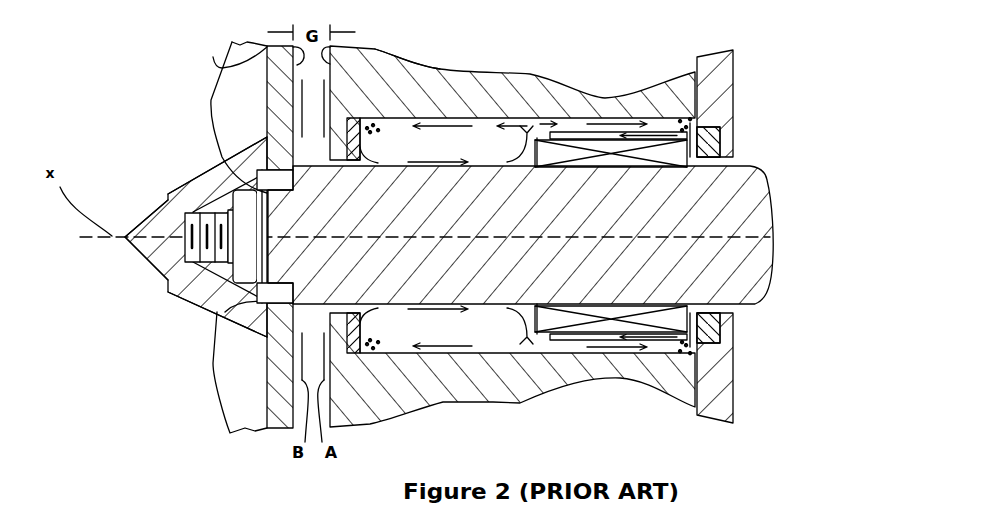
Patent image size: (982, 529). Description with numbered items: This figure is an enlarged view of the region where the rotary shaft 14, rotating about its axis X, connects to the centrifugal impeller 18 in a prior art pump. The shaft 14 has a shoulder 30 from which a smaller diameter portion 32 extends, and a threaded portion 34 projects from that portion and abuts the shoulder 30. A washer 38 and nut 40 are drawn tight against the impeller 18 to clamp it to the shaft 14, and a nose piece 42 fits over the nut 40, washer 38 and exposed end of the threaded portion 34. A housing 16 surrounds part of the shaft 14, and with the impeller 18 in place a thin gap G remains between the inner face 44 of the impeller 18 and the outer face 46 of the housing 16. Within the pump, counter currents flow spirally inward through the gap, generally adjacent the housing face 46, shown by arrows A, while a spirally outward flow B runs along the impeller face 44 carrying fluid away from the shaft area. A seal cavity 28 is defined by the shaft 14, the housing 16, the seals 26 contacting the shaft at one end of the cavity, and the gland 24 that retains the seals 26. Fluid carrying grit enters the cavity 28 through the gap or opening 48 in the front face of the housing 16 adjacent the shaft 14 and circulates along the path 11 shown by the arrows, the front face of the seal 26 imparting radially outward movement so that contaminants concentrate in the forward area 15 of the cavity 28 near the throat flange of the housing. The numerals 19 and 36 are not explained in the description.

The flow path 11 is at (485, 120).
The rotary shaft 14 is at (745, 167).
The forward area of the cavity 15 is at (413, 122).
The housing 16 is at (540, 118).
The centrifugal impeller 18 is at (281, 417).
The ring 19 is at (578, 117).
The gland 24 is at (723, 87).
The seals 26 is at (612, 143).
The seal cavity 28 is at (458, 122).
The shoulder 30 is at (223, 310).
The smaller diameter portion 32 is at (222, 157).
The threaded portion 34 is at (180, 290).
The housing 36 is at (453, 237).
The washer 38 is at (235, 197).
The nut 40 is at (168, 199).
The nose piece 42 is at (153, 248).
The inner face of the impeller 44 is at (217, 65).
The outer face of the housing 46 is at (447, 133).
The gap or opening in the front face of the housing 48 is at (330, 158).